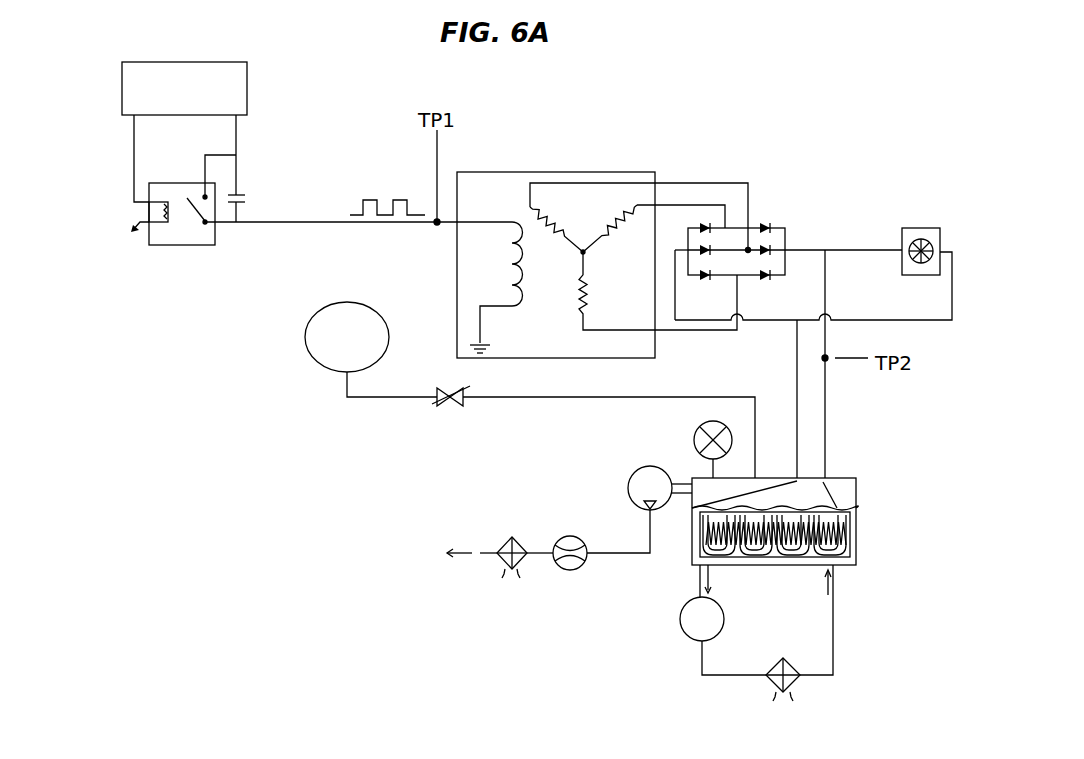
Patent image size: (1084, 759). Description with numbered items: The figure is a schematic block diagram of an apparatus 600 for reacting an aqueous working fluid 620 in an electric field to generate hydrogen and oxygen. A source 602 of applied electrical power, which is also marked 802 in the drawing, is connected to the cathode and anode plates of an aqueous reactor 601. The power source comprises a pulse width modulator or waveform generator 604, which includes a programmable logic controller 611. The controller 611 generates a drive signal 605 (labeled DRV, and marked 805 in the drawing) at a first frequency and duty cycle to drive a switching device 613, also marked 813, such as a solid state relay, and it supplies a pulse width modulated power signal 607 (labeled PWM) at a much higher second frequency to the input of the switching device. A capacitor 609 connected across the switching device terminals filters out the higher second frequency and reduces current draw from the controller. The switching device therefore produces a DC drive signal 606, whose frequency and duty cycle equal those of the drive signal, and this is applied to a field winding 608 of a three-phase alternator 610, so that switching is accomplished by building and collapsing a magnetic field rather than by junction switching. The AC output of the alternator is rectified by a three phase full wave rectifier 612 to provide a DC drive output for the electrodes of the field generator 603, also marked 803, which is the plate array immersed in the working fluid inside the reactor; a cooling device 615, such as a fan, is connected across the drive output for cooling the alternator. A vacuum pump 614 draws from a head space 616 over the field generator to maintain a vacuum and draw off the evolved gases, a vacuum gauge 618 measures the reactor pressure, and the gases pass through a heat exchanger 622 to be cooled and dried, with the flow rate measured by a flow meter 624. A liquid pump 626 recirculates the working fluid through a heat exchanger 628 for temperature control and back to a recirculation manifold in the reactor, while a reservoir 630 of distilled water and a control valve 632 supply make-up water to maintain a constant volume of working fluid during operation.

The apparatus 600 is at (104, 58).
The aqueous reactor 601 is at (840, 478).
The source of applied electrical power 602 is at (813, 310).
The power supply circuit 802 is at (796, 175).
The field generator 603 is at (775, 556).
The electrode cells 803 is at (742, 565).
The pulse width modulator 604 is at (320, 144).
The drive signal 605 is at (106, 158).
The drive line DRV 805 is at (132, 143).
The DC drive signal 606 is at (395, 200).
The pulse width modulated power signal 607 is at (237, 140).
The field winding 608 is at (507, 243).
The capacitor 609 is at (247, 202).
The three-phase alternator 610 is at (490, 172).
The programmable logic controller 611 is at (235, 62).
The three phase full wave rectifier 612 is at (785, 228).
The switching device 613 is at (173, 232).
The relay 813 is at (165, 245).
The vacuum pump 614 is at (634, 472).
The cooling device 615 is at (903, 228).
The head space 616 is at (847, 496).
The vacuum gauge 618 is at (696, 434).
The aqueous working fluid 620 is at (847, 560).
The heat exchanger 622 is at (512, 537).
The flow meter 624 is at (570, 536).
The liquid pump 626 is at (683, 632).
The heat exchanger 628 is at (797, 686).
The reservoir 630 is at (336, 302).
The control valve 632 is at (455, 406).